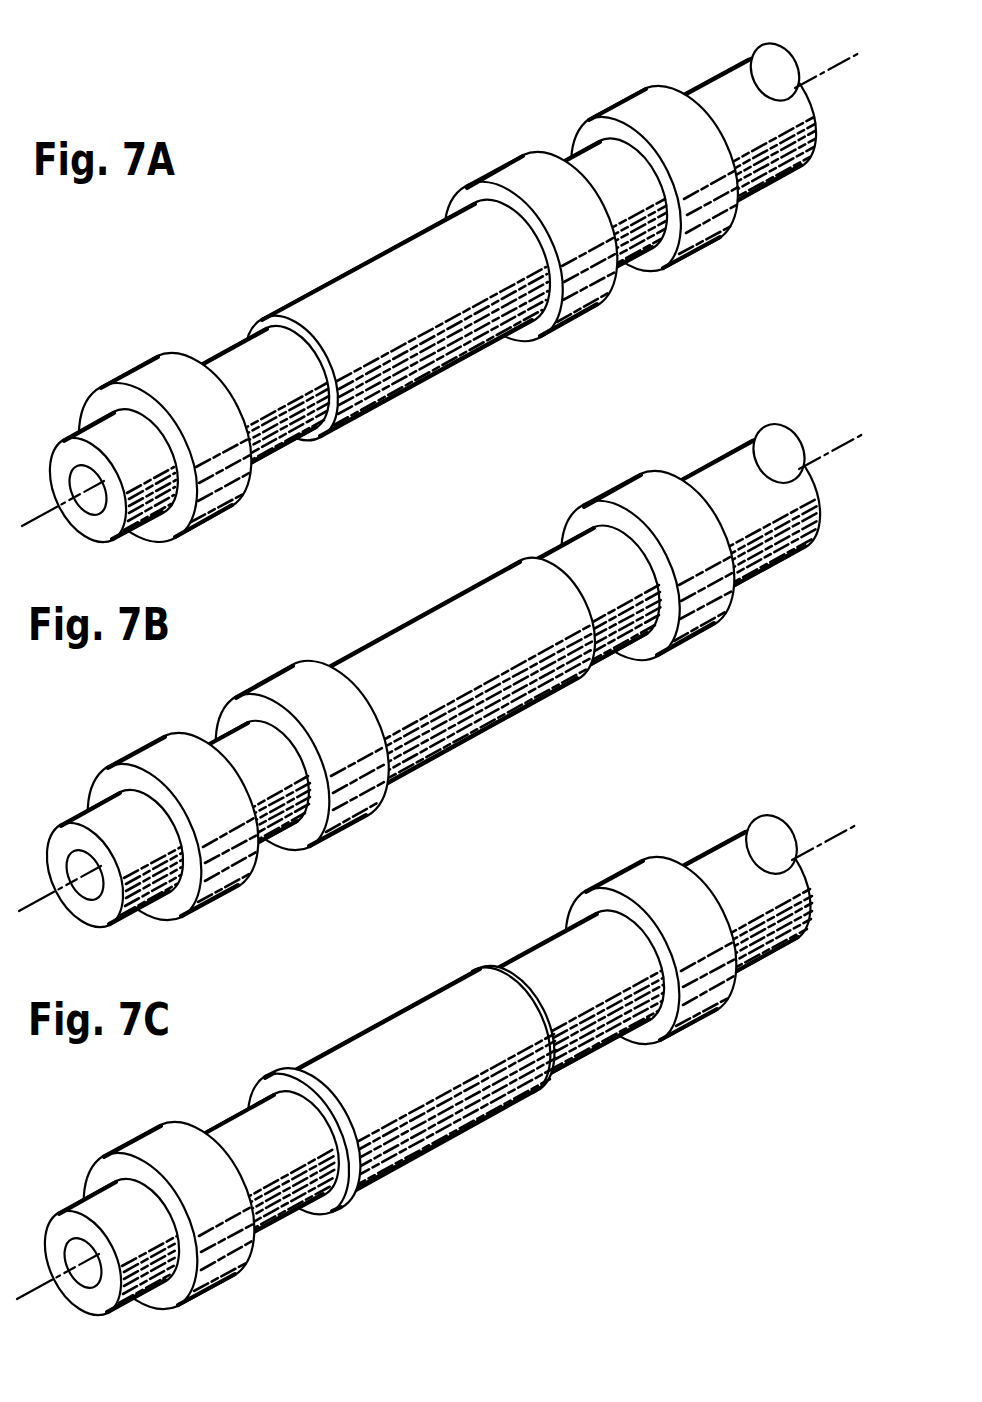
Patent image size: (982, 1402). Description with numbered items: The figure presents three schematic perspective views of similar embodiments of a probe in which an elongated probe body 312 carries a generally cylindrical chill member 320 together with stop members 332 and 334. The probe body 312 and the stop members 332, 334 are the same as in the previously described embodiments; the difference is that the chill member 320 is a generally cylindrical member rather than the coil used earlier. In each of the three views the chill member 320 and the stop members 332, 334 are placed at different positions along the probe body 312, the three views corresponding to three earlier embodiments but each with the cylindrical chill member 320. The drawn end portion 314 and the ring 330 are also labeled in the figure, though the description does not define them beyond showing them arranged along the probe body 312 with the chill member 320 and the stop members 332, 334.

In FIG. 7A, the probe body 312 is at (301, 445).
In FIG. 7B, the probe body 312 is at (620, 637).
In FIG. 7C, the probe body 312 is at (600, 1023).
In FIG. 7A, the tubular shaft end 314 is at (78, 432).
In FIG. 7B, the tubular shaft end 314 is at (97, 787).
In FIG. 7C, the tubular shaft end 314 is at (90, 1180).
In FIG. 7A, the chill member 320 is at (392, 246).
In FIG. 7B, the chill member 320 is at (520, 716).
In FIG. 7C, the chill member 320 is at (485, 1120).
In FIG. 7A, the ring 330 is at (493, 152).
In FIG. 7B, the ring 330 is at (367, 813).
In FIG. 7C, the ring 330 is at (323, 1217).
In FIG. 7A, the stop member 332 is at (232, 506).
In FIG. 7B, the stop member 332 is at (141, 740).
In FIG. 7C, the stop member 332 is at (157, 1130).
In FIG. 7A, the stop member 334 is at (655, 100).
In FIG. 7B, the stop member 334 is at (722, 617).
In FIG. 7C, the stop member 334 is at (710, 1007).